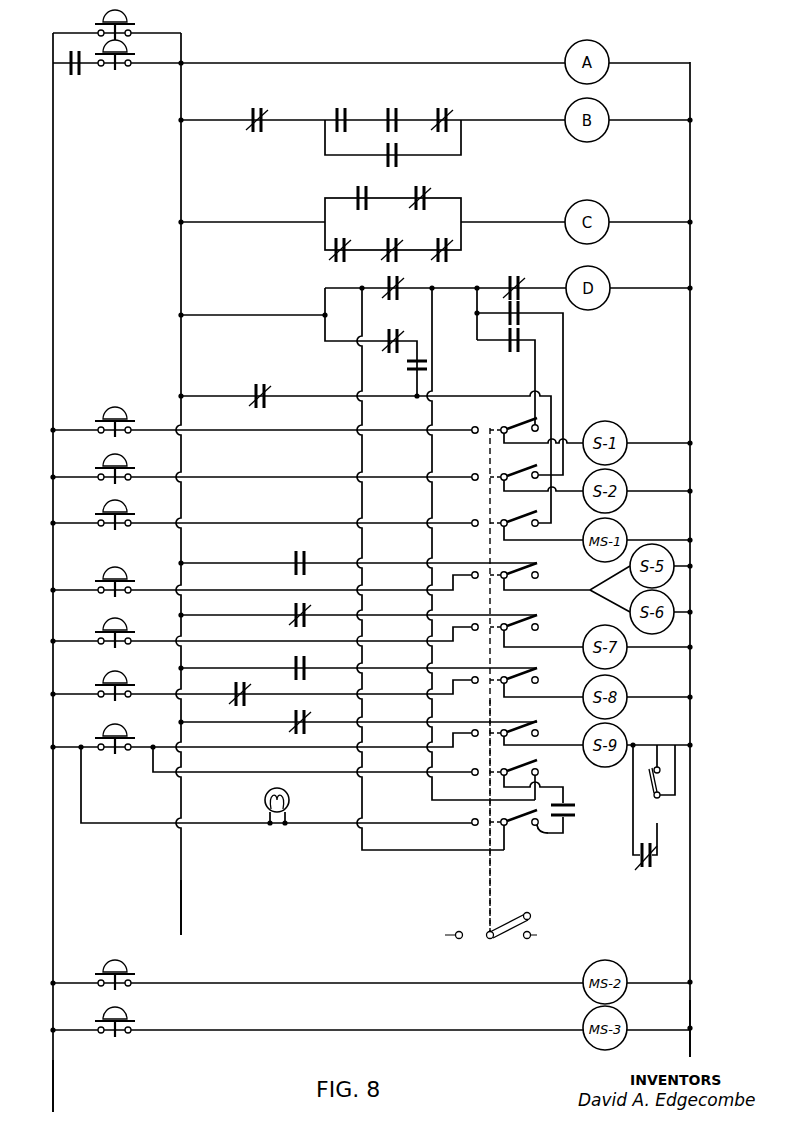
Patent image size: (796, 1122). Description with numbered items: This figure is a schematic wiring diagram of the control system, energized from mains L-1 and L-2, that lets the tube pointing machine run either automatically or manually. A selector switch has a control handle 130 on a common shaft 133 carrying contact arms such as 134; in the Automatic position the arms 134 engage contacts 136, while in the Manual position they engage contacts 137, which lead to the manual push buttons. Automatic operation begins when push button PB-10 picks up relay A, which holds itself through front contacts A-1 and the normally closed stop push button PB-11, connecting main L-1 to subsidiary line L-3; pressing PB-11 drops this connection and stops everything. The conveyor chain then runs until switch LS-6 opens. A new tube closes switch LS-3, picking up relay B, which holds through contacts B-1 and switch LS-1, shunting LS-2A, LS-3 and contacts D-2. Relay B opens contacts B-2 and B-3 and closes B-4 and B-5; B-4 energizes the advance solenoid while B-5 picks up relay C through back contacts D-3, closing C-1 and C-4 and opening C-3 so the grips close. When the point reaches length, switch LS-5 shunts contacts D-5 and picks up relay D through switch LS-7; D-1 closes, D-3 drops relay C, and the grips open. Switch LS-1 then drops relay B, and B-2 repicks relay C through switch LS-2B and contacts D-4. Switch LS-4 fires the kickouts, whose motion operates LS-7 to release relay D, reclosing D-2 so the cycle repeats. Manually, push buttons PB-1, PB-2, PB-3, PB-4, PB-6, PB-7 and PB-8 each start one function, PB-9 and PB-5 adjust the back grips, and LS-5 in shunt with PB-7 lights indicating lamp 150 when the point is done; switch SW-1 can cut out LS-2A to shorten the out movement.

The push button PB-10 is at (131, 22).
The stop push button PB-11 is at (119, 70).
The front contacts of relay A A-1 is at (77, 72).
The limit switch LS-1 is at (266, 128).
The limit switch LS-2A is at (350, 100).
The limit switch LS-3 is at (397, 108).
The contacts of relay D D-2 is at (447, 112).
The front contacts of relay B B-1 is at (384, 160).
The contacts of relay B B-5 is at (356, 196).
The back contacts of relay D D-3 is at (434, 197).
The contacts of relay B B-2 is at (397, 246).
The limit switch LS-2B is at (332, 254).
The contacts of relay D D-4 is at (449, 253).
The contacts of relay D D-5 is at (403, 281).
The limit switch LS-7 is at (521, 285).
The limit switch LS-4 is at (520, 318).
The contacts of relay D D-1 is at (399, 336).
The contacts of relay C C-1 is at (410, 371).
The limit switch LS-6 is at (257, 390).
The push button PB-8 is at (122, 404).
The push button PB-4 is at (126, 464).
The push button PB-1 is at (126, 510).
The push button PB-6 is at (126, 576).
The push button PB-3 is at (126, 627).
The push button PB-2 is at (126, 680).
The out push button PB-7 is at (126, 733).
The push button PB-9 is at (126, 968).
The push button PB-5 is at (126, 1016).
The contacts of relay C C-4 is at (306, 560).
The back contacts of relay C C-3 is at (306, 614).
The contacts of relay B B-4 is at (306, 667).
The limit switch LS-5 is at (240, 690).
The back contacts of relay B B-3 is at (306, 721).
The indicating lamp 150 is at (291, 799).
The contacts 137 is at (474, 826).
The contact arms 134 is at (527, 816).
The contacts 136 is at (540, 830).
The common shaft 133 is at (487, 879).
The control handle 130 is at (510, 912).
The switch SW-1 is at (660, 781).
The main L-1 is at (55, 1096).
The main L-2 is at (693, 1050).
The subsidiary line L-3 is at (182, 899).